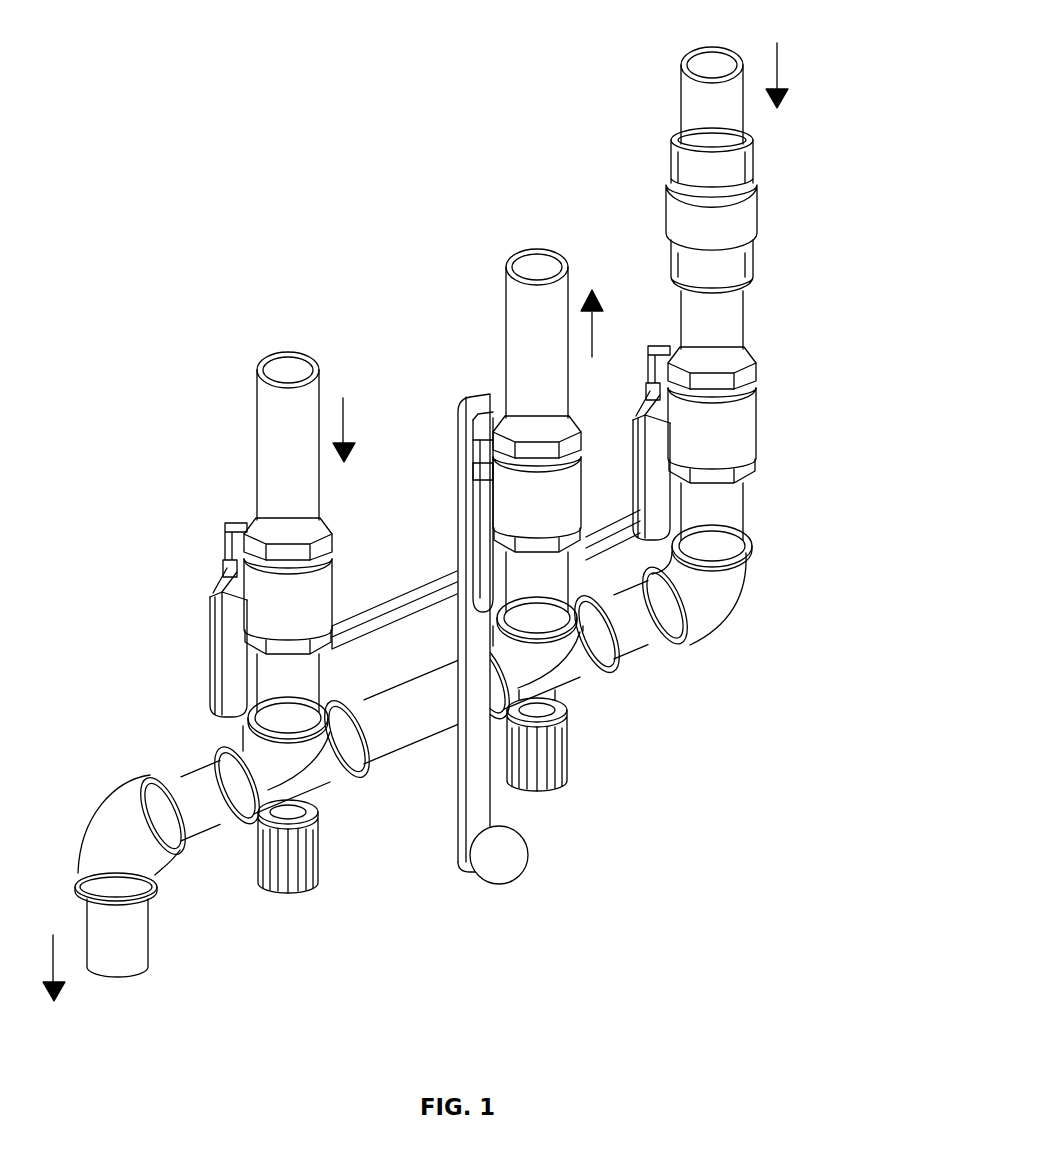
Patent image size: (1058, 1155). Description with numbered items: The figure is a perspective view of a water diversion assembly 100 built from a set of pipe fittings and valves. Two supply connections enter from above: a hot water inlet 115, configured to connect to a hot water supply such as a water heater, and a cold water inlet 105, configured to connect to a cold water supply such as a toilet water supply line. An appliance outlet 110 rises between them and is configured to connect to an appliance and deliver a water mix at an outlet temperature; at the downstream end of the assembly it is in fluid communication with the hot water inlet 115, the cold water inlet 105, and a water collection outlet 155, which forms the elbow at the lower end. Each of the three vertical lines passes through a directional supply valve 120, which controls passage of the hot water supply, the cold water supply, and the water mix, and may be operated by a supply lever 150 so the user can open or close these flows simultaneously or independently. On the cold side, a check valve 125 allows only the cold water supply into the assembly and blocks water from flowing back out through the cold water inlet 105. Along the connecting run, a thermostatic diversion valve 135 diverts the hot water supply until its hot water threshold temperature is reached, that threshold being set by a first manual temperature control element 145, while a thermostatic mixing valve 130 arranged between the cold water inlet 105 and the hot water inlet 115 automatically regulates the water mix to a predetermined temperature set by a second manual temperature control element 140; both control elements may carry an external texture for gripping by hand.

The water diversion assembly 100 is at (290, 110).
The cold water inlet 105 is at (680, 48).
The appliance outlet 110 is at (512, 250).
The hot water inlet 115 is at (265, 345).
The directional supply valve 120 is at (278, 600).
The check valve 125 is at (719, 231).
The thermostatic mixing valve 130 is at (559, 662).
The thermostatic diversion valve 135 is at (312, 764).
The second manual temperature control element 140 is at (565, 802).
The first manual temperature control element 145 is at (325, 904).
The supply lever 150 is at (530, 879).
The water collection outlet 155 is at (144, 980).